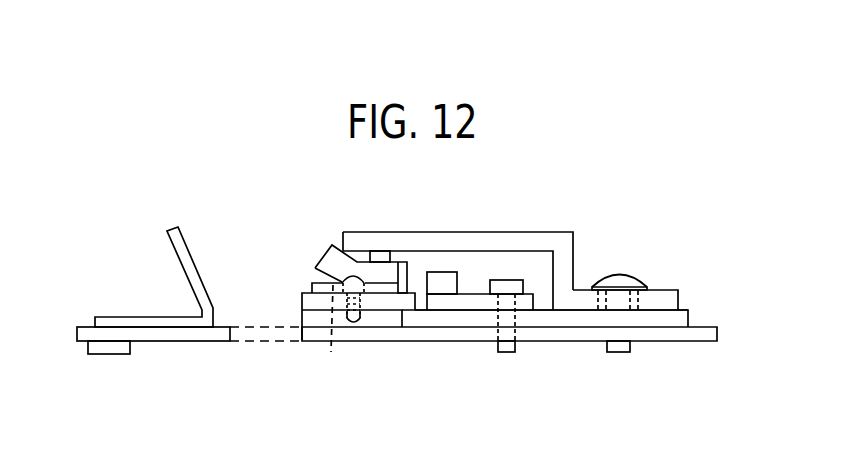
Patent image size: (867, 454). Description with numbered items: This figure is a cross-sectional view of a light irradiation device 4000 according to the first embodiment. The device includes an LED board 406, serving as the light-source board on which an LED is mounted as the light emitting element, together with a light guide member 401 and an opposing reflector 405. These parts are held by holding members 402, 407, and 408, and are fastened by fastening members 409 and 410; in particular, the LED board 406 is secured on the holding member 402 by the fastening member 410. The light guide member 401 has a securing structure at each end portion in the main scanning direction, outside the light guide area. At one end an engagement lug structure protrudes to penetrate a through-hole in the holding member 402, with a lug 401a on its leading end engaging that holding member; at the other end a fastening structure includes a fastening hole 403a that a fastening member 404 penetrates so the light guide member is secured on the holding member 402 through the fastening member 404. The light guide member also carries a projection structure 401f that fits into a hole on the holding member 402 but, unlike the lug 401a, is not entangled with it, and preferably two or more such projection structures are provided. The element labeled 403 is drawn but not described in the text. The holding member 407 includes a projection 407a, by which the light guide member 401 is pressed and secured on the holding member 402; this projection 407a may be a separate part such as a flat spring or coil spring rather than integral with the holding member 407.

The light irradiation device 4000 is at (556, 212).
The opposing reflector 405 is at (178, 251).
The light guide member 401 is at (323, 257).
The lug 401a is at (400, 326).
The projection structure 401f is at (357, 330).
The projection 407a is at (384, 251).
The LED board 406 is at (443, 272).
The fastening member 404 is at (340, 281).
The support block 403 is at (310, 288).
The fastening hole 403a is at (329, 352).
The fastening member 409 is at (626, 277).
The holding member 407 is at (678, 302).
The holding member 402 is at (688, 322).
The holding member 408 is at (655, 341).
The fastening member 410 is at (509, 358).